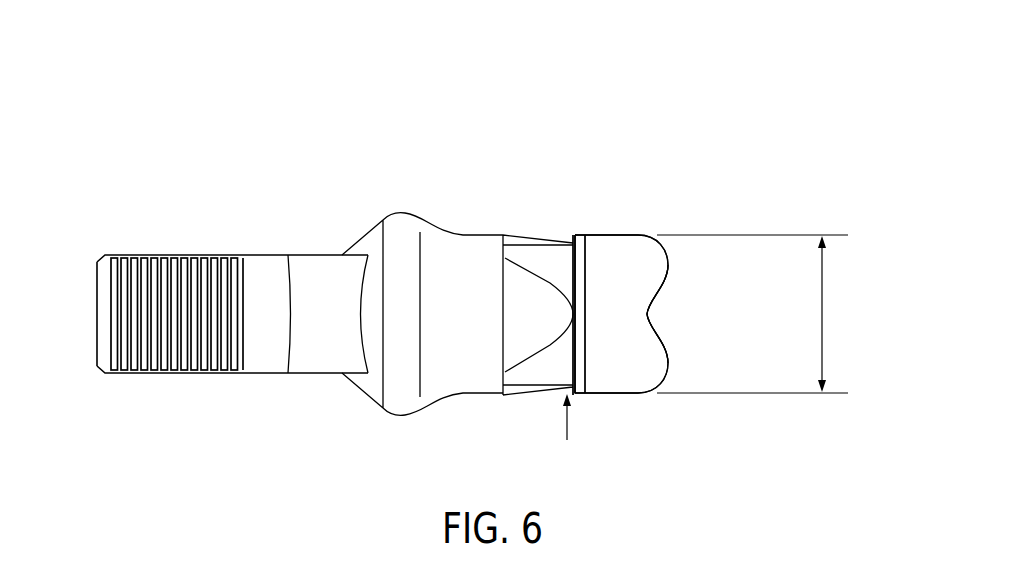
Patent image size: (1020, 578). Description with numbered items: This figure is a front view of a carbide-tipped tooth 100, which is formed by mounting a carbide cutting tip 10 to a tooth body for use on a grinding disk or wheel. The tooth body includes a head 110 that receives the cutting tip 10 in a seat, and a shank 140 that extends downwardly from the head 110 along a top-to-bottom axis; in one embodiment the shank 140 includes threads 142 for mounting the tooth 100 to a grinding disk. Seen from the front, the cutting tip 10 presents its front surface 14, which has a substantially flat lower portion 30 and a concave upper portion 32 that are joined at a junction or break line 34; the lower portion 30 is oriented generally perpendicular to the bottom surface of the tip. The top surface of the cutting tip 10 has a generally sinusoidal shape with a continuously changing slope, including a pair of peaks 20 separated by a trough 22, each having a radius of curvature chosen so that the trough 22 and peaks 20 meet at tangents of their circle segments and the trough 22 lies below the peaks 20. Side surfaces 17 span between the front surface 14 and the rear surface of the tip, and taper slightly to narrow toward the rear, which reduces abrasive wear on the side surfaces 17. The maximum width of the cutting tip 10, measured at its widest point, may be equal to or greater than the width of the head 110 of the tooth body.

The carbide-tipped tooth 100 is at (472, 268).
The carbide cutting tip 10 is at (636, 307).
The front surface 14 is at (643, 254).
The side surfaces 17 is at (610, 235).
The peaks 20 is at (670, 263).
The trough 22 is at (647, 313).
The lower portion 30 is at (567, 228).
The upper portion 32 is at (598, 247).
The junction or break line 34 is at (585, 247).
The head 110 is at (458, 248).
The shank 140 is at (232, 272).
The threads 142 is at (190, 267).